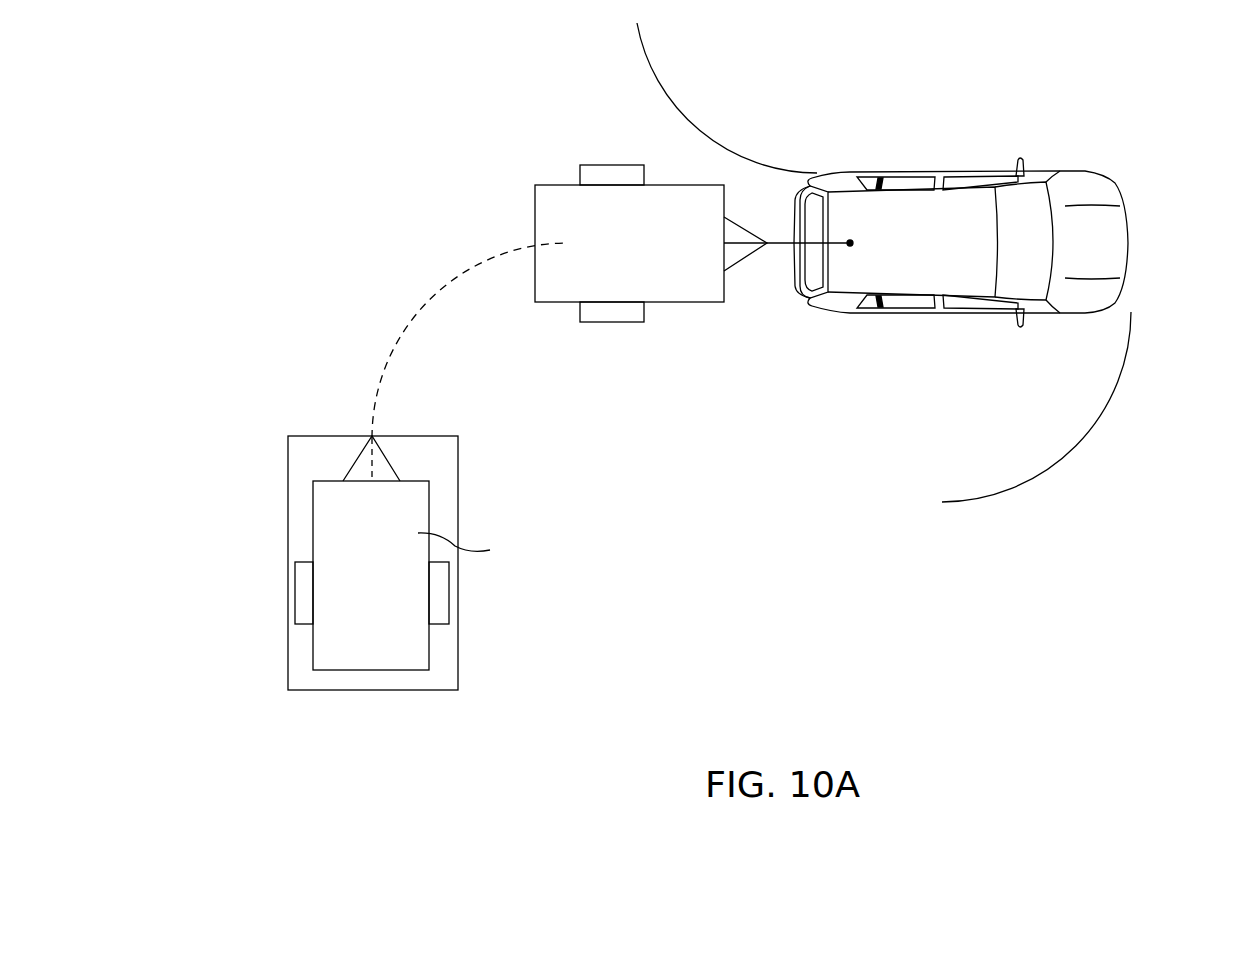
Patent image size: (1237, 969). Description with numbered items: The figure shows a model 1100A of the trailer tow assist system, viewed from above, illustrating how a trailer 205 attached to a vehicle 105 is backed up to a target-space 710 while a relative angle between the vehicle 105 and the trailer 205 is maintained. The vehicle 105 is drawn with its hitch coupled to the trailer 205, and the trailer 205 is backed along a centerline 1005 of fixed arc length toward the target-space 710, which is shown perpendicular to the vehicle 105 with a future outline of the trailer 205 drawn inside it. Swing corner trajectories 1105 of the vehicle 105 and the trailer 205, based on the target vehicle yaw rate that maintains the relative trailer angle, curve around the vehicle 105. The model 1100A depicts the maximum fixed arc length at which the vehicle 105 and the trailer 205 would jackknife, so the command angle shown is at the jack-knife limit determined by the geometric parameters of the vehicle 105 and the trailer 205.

The model 1100A is at (272, 137).
The trailer 205 is at (558, 186).
The vehicle 105 is at (932, 172).
The swing corner trajectories 1105 is at (700, 132).
The centerline 1005 is at (428, 297).
The target-space 710 is at (288, 466).